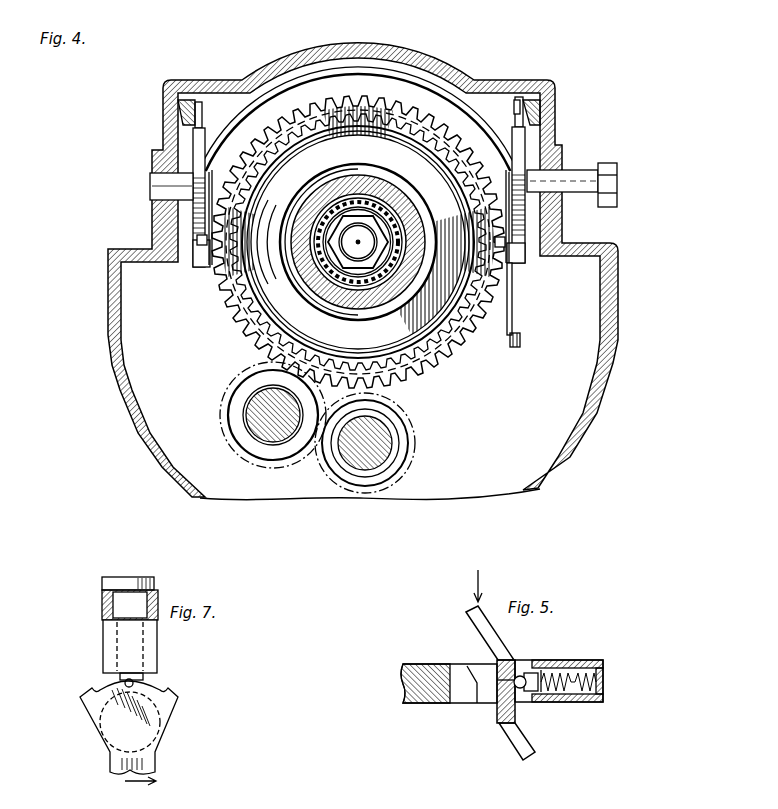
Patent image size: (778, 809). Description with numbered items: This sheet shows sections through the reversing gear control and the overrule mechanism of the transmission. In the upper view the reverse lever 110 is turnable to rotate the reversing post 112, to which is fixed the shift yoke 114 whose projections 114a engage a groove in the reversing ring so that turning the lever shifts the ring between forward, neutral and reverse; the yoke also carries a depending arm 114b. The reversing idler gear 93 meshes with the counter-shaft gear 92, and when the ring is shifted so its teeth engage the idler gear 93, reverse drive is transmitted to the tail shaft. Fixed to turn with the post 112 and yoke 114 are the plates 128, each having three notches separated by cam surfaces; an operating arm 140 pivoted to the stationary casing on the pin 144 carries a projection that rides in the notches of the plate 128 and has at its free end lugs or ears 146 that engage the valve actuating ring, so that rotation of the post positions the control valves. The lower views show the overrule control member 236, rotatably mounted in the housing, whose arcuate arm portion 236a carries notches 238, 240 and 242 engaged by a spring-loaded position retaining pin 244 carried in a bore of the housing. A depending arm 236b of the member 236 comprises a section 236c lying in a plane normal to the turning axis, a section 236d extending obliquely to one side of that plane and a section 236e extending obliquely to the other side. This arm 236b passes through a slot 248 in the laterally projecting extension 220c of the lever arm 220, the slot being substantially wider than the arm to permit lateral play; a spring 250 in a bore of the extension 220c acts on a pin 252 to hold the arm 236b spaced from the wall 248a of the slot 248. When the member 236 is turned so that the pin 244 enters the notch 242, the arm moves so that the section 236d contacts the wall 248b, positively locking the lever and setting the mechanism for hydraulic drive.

In FIG. 4, the shift yoke 114 is at (370, 68).
In FIG. 4, the projections 114a is at (220, 263).
In FIG. 4, the ring gear arm 114b is at (508, 315).
In FIG. 4, the pin 144 is at (188, 104).
In FIG. 4, the plates 128 is at (195, 140).
In FIG. 4, the operating arm 140 is at (517, 106).
In FIG. 4, the reversing post 112 is at (580, 178).
In FIG. 4, the reverse lever 110 is at (612, 183).
In FIG. 4, the lugs or ears 146 is at (197, 258).
In FIG. 4, the reversing idler gear 93 is at (250, 414).
In FIG. 4, the gear 92 is at (415, 438).
In FIG. 7, the position retaining pin 244 is at (135, 683).
In FIG. 7, the notch 238 is at (163, 690).
In FIG. 7, the notch 242 is at (177, 698).
In FIG. 7, the notch 240 is at (93, 690).
In FIG. 7, the overrule control member 236 is at (140, 746).
In FIG. 7, the arcuate arm portion 236a is at (100, 700).
In FIG. 7, the arm 236b is at (150, 768).
In FIG. 5, the arm 236b is at (505, 713).
In FIG. 5, the section 236c is at (525, 672).
In FIG. 5, the section 236d is at (490, 628).
In FIG. 5, the section 236e is at (533, 752).
In FIG. 5, the arm 220 is at (412, 693).
In FIG. 5, the laterally projecting extension 220c is at (580, 663).
In FIG. 5, the slot 248 is at (487, 693).
In FIG. 5, the wall 248a is at (517, 702).
In FIG. 5, the wall 248b is at (455, 670).
In FIG. 5, the spring 250 is at (600, 681).
In FIG. 5, the pin 252 is at (500, 672).